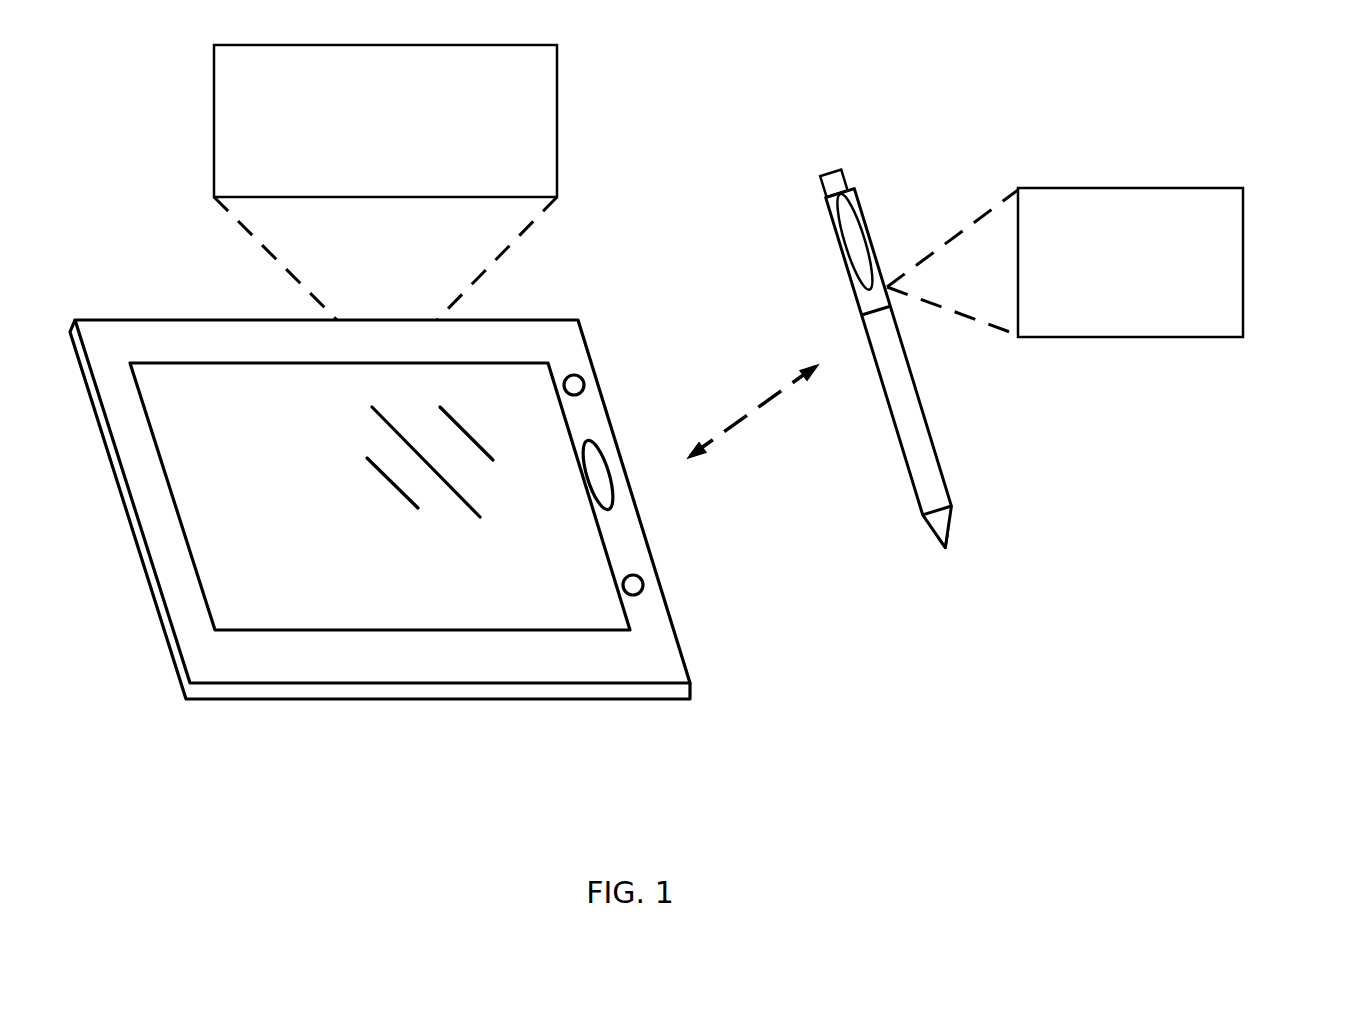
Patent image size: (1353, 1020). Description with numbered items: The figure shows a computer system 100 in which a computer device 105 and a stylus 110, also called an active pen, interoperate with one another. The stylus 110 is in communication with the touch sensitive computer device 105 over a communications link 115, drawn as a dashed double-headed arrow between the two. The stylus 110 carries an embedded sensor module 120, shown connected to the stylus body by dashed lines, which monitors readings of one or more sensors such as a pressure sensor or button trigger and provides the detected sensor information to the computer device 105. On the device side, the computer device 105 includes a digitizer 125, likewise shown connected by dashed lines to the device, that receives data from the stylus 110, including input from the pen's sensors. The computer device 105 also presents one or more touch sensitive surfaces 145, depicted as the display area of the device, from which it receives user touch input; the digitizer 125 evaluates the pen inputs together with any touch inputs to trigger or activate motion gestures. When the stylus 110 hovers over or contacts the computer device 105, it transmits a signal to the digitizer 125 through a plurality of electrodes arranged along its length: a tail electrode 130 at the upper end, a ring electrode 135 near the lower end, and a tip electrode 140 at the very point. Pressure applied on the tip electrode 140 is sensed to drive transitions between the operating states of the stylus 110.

The computer system 100 is at (1212, 857).
The computer device 105 is at (488, 700).
The stylus 110 is at (923, 402).
The communications link 115 is at (757, 413).
The sensor module 120 is at (1065, 262).
The digitizer 125 is at (385, 182).
The tail electrode 130 is at (832, 172).
The ring electrode 135 is at (953, 517).
The tip electrode 140 is at (947, 550).
The touch sensitive surface 145 is at (380, 496).